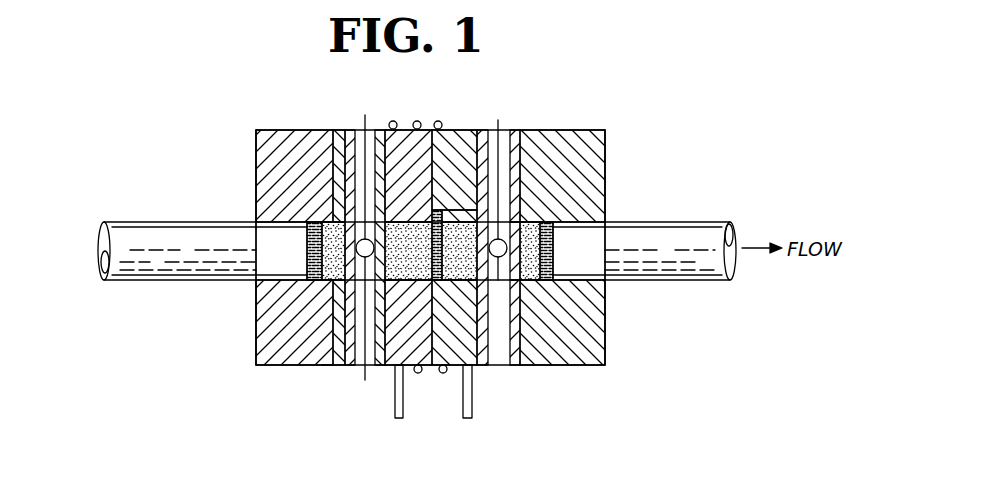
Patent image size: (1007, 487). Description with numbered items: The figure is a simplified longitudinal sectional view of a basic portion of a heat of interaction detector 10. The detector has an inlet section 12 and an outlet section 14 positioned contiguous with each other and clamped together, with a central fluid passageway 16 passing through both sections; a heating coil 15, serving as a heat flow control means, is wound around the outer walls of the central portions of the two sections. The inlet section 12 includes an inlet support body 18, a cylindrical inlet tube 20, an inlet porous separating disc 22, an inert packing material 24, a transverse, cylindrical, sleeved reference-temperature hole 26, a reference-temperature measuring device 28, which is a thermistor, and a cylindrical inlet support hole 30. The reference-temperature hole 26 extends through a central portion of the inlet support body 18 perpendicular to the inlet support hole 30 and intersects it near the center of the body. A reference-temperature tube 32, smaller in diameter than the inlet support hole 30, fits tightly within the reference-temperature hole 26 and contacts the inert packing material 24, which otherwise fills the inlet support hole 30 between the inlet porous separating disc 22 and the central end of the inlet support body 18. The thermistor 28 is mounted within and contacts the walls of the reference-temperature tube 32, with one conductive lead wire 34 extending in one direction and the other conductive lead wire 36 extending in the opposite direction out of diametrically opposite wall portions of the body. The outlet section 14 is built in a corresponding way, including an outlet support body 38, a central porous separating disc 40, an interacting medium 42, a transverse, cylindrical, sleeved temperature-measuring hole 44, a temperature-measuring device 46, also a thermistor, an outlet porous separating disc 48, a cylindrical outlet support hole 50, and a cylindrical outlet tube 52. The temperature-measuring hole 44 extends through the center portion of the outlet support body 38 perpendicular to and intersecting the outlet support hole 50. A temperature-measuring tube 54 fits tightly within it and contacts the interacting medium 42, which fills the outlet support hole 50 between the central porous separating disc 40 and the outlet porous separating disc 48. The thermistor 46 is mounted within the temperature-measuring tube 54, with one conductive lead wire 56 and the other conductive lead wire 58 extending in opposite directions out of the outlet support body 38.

The heat of interaction detector 10 is at (679, 111).
The inlet section 12 is at (272, 127).
The outlet section 14 is at (555, 125).
The heating coil 15 is at (403, 395).
The central fluid passageway 16 is at (94, 250).
The inlet support body 18 is at (257, 187).
The cylindrical inlet tube 20 is at (135, 222).
The inlet porous separating disc 22 is at (317, 262).
The inert packing material 24 is at (377, 362).
The reference-temperature hole 26 is at (375, 128).
The reference-temperature measuring device 28 is at (322, 362).
The cylindrical inlet support hole 30 is at (335, 128).
The reference-temperature tube 32 is at (302, 240).
The conductive lead wire 34 is at (363, 123).
The conductive lead wire 36 is at (366, 375).
The outlet support body 38 is at (606, 182).
The central porous separating disc 40 is at (437, 210).
The interacting medium 42 is at (475, 362).
The temperature-measuring hole 44 is at (513, 137).
The temperature-measuring device 46 is at (518, 367).
The outlet porous separating disc 48 is at (578, 263).
The cylindrical outlet support hole 50 is at (530, 222).
The cylindrical outlet tube 52 is at (703, 220).
The temperature-measuring tube 54 is at (543, 236).
The conductive lead wire 56 is at (498, 122).
The conductive lead wire 58 is at (500, 366).